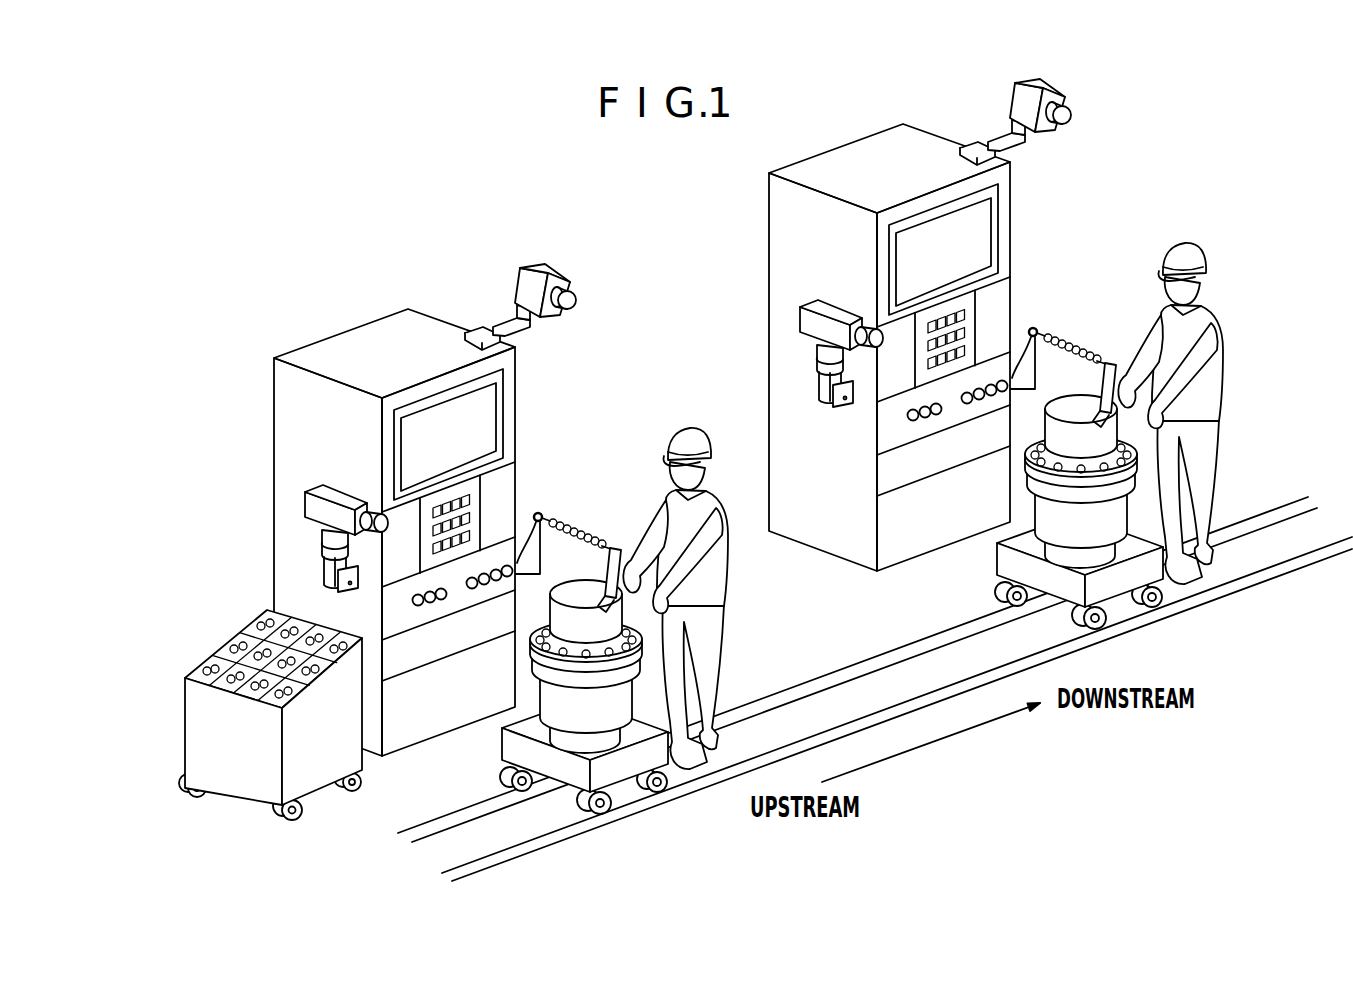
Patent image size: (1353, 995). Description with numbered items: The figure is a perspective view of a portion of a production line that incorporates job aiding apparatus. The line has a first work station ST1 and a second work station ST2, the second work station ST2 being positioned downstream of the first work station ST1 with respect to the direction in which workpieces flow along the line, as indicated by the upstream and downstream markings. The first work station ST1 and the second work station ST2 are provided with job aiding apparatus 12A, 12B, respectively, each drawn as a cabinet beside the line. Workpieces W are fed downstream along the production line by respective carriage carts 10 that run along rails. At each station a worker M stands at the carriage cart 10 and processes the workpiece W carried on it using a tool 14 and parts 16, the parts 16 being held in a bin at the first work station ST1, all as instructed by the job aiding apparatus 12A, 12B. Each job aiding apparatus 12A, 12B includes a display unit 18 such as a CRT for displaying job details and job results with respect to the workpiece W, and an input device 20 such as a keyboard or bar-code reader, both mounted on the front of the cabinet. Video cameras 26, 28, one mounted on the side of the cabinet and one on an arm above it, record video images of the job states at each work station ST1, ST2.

The carriage cart 10 is at (617, 775).
The job aiding apparatus 12A is at (312, 337).
The job aiding apparatus 12B is at (822, 147).
The tool 14 is at (610, 565).
The parts 16 is at (268, 703).
The display unit 18 is at (484, 418).
The input device 20 is at (477, 513).
The video camera 26 is at (317, 513).
The video camera 28 is at (556, 274).
The workpiece W is at (548, 692).
The worker M is at (712, 583).
The first work station ST1 is at (416, 481).
The second work station ST2 is at (973, 315).